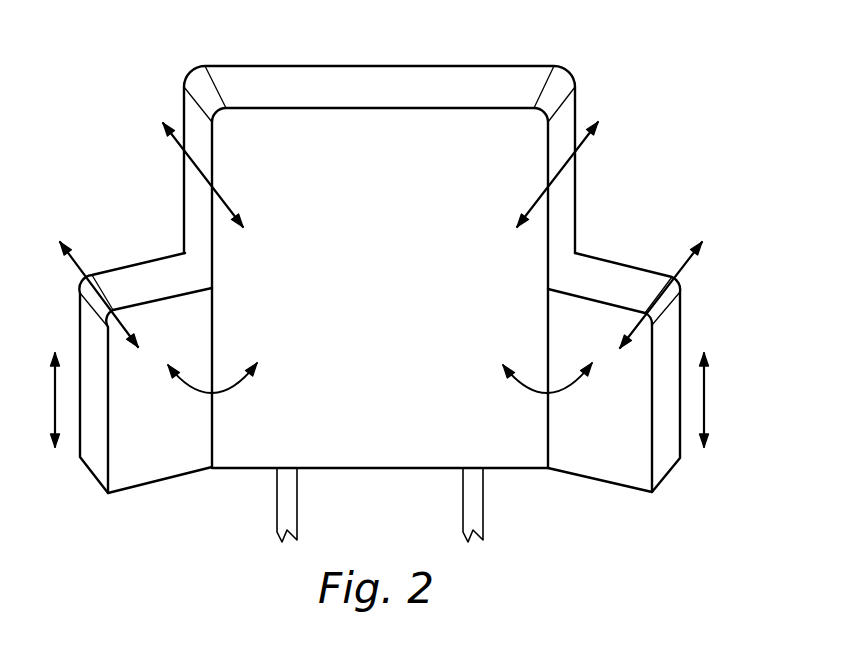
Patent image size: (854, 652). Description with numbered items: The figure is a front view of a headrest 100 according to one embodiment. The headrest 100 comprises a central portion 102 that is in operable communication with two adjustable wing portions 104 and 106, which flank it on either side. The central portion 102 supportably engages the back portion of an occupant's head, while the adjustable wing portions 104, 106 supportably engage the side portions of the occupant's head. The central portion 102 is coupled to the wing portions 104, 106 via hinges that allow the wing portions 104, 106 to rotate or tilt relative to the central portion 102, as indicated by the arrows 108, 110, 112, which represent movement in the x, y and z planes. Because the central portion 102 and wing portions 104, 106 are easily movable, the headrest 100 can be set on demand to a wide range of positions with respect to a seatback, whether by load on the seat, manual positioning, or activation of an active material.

The headrest 100 is at (640, 88).
The central portion 102 is at (422, 70).
The adjustable wing portion 104 is at (602, 270).
The adjustable wing portion 106 is at (153, 280).
The arrow 108 is at (233, 388).
The arrow 110 is at (53, 400).
The arrow 112 is at (197, 173).